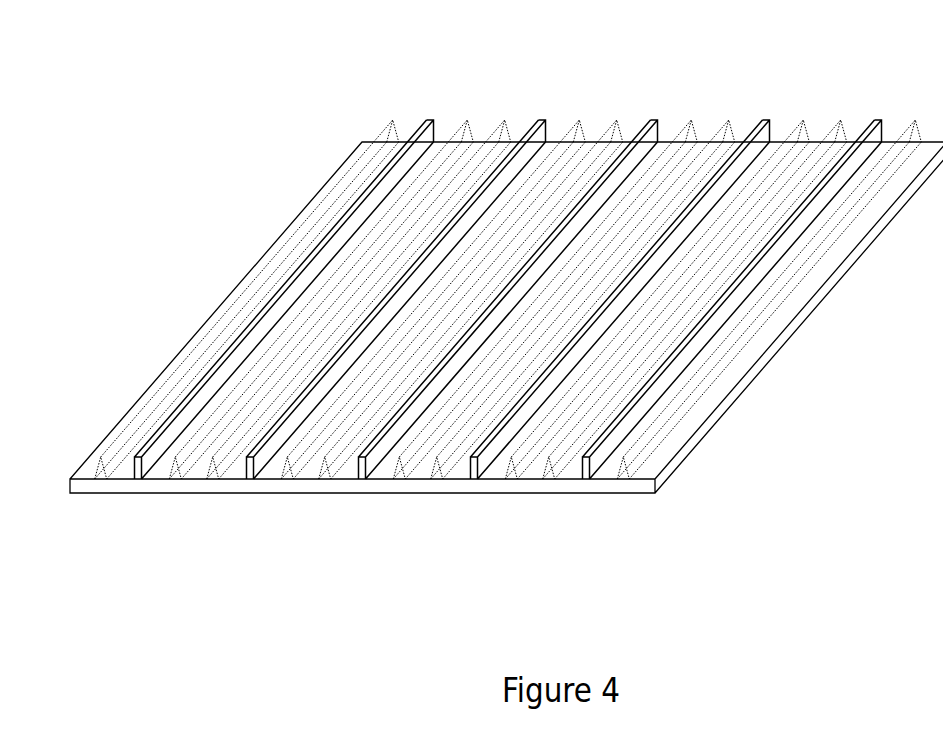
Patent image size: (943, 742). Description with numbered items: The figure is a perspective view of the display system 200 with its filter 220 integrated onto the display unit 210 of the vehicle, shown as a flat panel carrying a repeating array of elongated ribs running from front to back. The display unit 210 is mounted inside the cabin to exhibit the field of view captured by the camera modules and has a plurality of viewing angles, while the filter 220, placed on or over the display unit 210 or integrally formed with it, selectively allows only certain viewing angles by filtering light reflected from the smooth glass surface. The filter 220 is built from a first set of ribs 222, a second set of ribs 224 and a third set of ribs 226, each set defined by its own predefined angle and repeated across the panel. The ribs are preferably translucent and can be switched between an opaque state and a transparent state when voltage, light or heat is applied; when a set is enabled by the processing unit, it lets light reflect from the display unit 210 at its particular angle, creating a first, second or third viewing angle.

The display system 200 is at (716, 71).
The display unit 210 is at (765, 360).
The filter 220 is at (32, 573).
The first set of ribs 222 is at (99, 470).
The second set of ribs 224 is at (121, 470).
The third set of ribs 226 is at (140, 465).